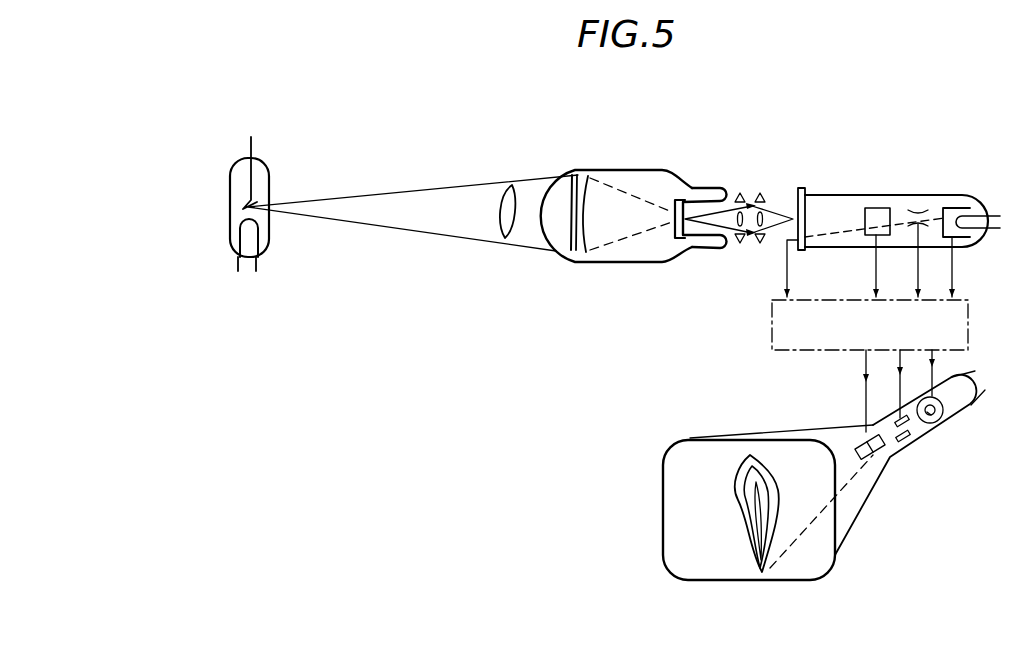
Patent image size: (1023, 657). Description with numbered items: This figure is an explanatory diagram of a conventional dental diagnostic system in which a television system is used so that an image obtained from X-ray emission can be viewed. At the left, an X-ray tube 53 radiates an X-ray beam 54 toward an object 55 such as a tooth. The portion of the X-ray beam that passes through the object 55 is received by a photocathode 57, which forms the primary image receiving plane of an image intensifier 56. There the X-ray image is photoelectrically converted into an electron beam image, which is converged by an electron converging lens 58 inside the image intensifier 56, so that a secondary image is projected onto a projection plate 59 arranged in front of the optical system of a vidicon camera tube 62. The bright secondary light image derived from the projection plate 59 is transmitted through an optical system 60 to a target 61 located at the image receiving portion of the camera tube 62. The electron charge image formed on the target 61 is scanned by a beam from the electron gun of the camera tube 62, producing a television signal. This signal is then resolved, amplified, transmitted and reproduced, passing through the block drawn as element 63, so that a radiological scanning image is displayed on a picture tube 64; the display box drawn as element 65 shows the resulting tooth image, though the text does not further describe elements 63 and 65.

The X-ray tube 53 is at (290, 153).
The X-ray beam 54 is at (392, 205).
The object 55 is at (510, 190).
The image intensifier 56 is at (553, 197).
The photocathode 57 is at (597, 190).
The electron converging lens 58 is at (666, 213).
The projection plate 59 is at (704, 192).
The optical system 60 is at (762, 194).
The target 61 is at (804, 188).
The vidicon camera tube 62 is at (890, 195).
The signal processing circuit 63 is at (778, 337).
The picture tube 64 is at (856, 505).
The display 65 is at (671, 467).